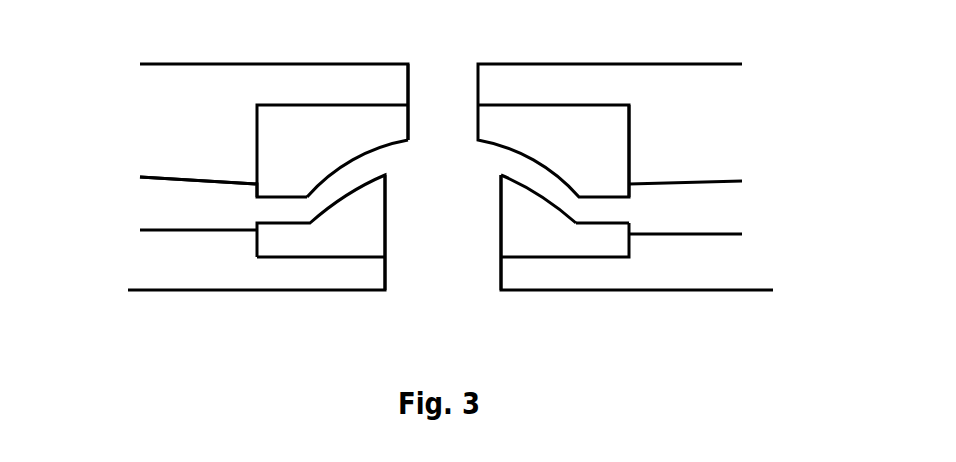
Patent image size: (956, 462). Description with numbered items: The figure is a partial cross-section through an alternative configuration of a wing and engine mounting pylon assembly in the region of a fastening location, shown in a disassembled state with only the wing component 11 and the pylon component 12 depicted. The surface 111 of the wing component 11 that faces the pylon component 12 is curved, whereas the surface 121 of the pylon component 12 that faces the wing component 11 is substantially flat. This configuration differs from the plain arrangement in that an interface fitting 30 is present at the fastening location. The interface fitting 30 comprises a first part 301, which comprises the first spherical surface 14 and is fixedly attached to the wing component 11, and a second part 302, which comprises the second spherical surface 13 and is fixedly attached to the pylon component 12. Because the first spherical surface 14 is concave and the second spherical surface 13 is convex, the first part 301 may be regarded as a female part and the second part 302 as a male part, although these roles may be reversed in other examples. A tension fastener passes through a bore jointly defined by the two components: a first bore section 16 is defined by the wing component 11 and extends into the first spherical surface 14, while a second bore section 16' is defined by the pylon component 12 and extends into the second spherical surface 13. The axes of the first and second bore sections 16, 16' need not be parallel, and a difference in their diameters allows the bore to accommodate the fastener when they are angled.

The wing component 11 is at (236, 131).
The pylon component 12 is at (233, 275).
The second spherical surface 13 is at (537, 192).
The first spherical surface 14 is at (367, 150).
The first bore section 16 is at (443, 260).
The second bore section 16' is at (575, 102).
The interface fitting 30 is at (620, 268).
The surface of the wing component 111 is at (180, 178).
The surface of the pylon component 121 is at (157, 232).
The first part 301 is at (321, 151).
The second part 302 is at (369, 236).